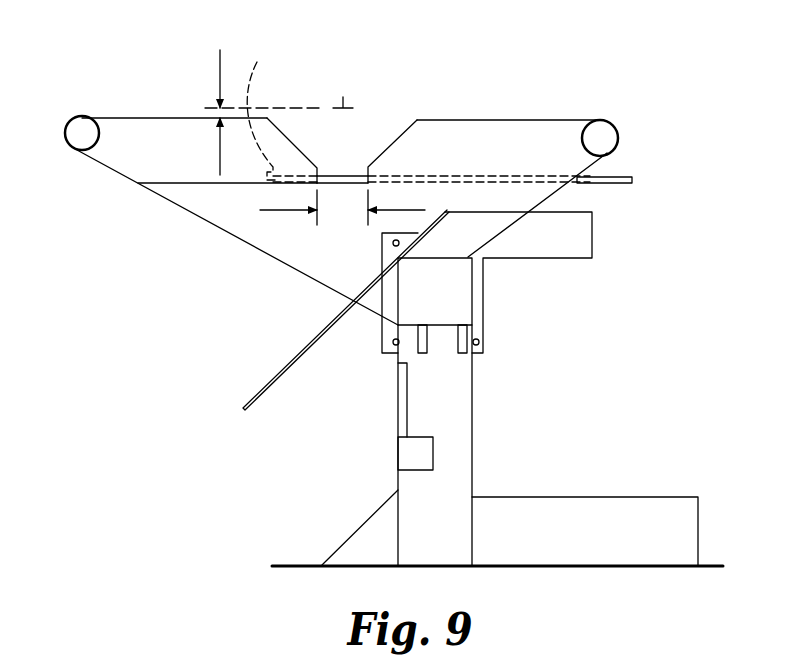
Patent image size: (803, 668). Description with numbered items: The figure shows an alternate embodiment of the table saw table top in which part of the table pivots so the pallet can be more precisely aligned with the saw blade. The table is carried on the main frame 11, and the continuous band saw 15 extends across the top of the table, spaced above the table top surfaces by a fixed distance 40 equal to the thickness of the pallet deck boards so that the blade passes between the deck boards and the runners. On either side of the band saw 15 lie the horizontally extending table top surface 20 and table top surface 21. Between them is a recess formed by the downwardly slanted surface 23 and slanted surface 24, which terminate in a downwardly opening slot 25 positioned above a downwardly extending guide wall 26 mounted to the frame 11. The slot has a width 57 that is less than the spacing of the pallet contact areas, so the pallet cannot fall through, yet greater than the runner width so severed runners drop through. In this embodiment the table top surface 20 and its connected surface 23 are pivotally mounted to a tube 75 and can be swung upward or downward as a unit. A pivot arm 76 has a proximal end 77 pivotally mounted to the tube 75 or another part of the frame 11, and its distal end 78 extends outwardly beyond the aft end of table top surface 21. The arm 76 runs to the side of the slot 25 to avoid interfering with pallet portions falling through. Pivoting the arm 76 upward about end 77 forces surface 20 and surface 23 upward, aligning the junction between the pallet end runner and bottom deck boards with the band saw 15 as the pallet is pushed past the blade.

The main frame 11 is at (567, 513).
The band saw 15 is at (343, 99).
The table top surface 20 is at (143, 117).
The table top surface 21 is at (490, 119).
The slanted surface 23 is at (283, 130).
The slanted surface 24 is at (385, 148).
The slot 25 is at (333, 187).
The guide wall 26 is at (300, 360).
The fixed distance 40 is at (262, 99).
The width of slot 57 is at (273, 212).
The tube 75 is at (76, 117).
The pivot arm 76 is at (612, 177).
The proximal end 77 is at (259, 117).
The distal end 78 is at (633, 185).